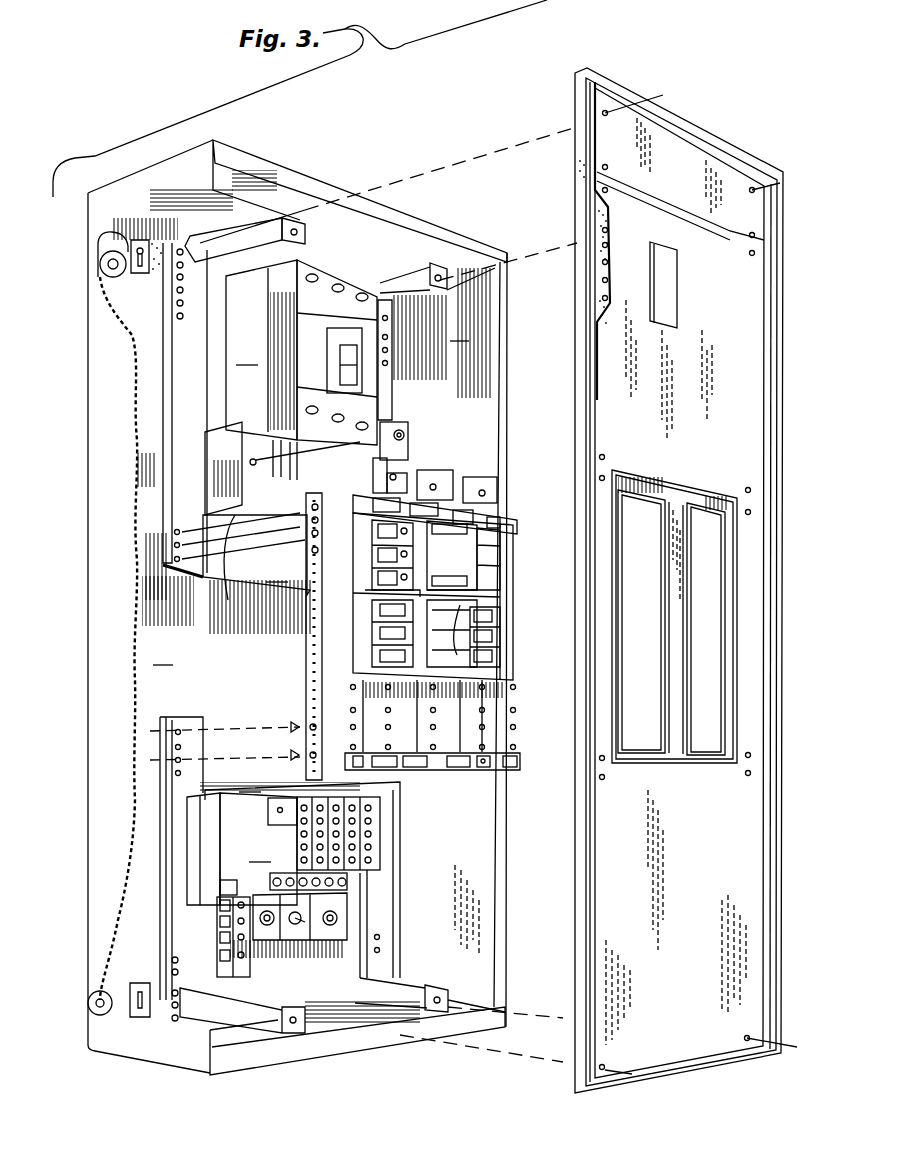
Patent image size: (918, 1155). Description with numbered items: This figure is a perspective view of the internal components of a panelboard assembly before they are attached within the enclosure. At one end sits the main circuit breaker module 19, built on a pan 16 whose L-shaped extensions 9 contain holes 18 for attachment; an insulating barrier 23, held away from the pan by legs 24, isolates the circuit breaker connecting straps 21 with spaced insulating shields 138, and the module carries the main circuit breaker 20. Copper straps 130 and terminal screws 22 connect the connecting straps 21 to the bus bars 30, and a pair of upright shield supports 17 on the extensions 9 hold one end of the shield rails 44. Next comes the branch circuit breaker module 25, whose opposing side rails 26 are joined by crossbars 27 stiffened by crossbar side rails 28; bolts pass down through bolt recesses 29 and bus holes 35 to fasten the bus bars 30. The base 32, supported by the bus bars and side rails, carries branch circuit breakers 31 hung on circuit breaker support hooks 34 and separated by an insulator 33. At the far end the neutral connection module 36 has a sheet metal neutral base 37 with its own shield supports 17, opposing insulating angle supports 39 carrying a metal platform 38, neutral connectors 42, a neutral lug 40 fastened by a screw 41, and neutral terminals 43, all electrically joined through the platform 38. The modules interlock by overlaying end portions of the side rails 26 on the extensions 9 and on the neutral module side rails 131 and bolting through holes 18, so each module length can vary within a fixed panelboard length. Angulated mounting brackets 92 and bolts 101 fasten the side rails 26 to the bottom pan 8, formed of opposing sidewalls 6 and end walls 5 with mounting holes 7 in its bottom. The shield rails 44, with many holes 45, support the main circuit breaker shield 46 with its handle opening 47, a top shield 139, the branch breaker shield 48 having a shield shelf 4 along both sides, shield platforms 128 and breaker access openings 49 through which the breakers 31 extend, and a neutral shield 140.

The shield shelf 4 is at (730, 650).
The end wall 5 is at (288, 165).
The sidewall 6 is at (102, 457).
The mounting hole 7 is at (100, 245).
The bottom pan 8 is at (297, 606).
The L-shaped extension 9 is at (188, 355).
The pan 16 is at (236, 554).
The shield support 17 is at (257, 242).
The hole 18 is at (177, 292).
The main circuit breaker module 19 is at (151, 400).
The main circuit breaker 20 is at (301, 370).
The circuit breaker connecting strap 21 is at (248, 455).
The terminal screw 22 is at (407, 432).
The insulating barrier 23 is at (206, 454).
The leg 24 is at (232, 583).
The branch circuit breaker module 25 is at (296, 642).
The side rail 26 is at (315, 670).
The crossbar 27 is at (519, 515).
The crossbar side rail 28 is at (467, 773).
The bolt recess 29 is at (482, 773).
The bus bar 30 is at (490, 720).
The branch circuit breaker 31 is at (436, 593).
The base 32 is at (513, 571).
The insulator 33 is at (457, 655).
The circuit breaker support hook 34 is at (487, 597).
The bus hole 35 is at (480, 745).
The neutral connection module 36 is at (150, 863).
The neutral base 37 is at (300, 871).
The metal platform 38 is at (283, 885).
The angle support 39 is at (197, 893).
The neutral lug 40 is at (306, 933).
The screw 41 is at (271, 930).
The neutral connector 42 is at (222, 928).
The neutral terminal 43 is at (380, 850).
The shield rail 44 is at (575, 110).
The hole 45 is at (603, 233).
The main circuit breaker shield 46 is at (696, 423).
The handle opening 47 is at (670, 315).
The branch breaker shield 48 is at (674, 566).
The breaker access opening 49 is at (713, 685).
The angulated mounting bracket 92 is at (100, 283).
The bolt 101 is at (112, 240).
The shield platform 128 is at (747, 588).
The copper strap 130 is at (417, 450).
The side rail 131 is at (165, 812).
The insulating shield 138 is at (215, 497).
The top shield 139 is at (707, 164).
The neutral shield 140 is at (719, 869).